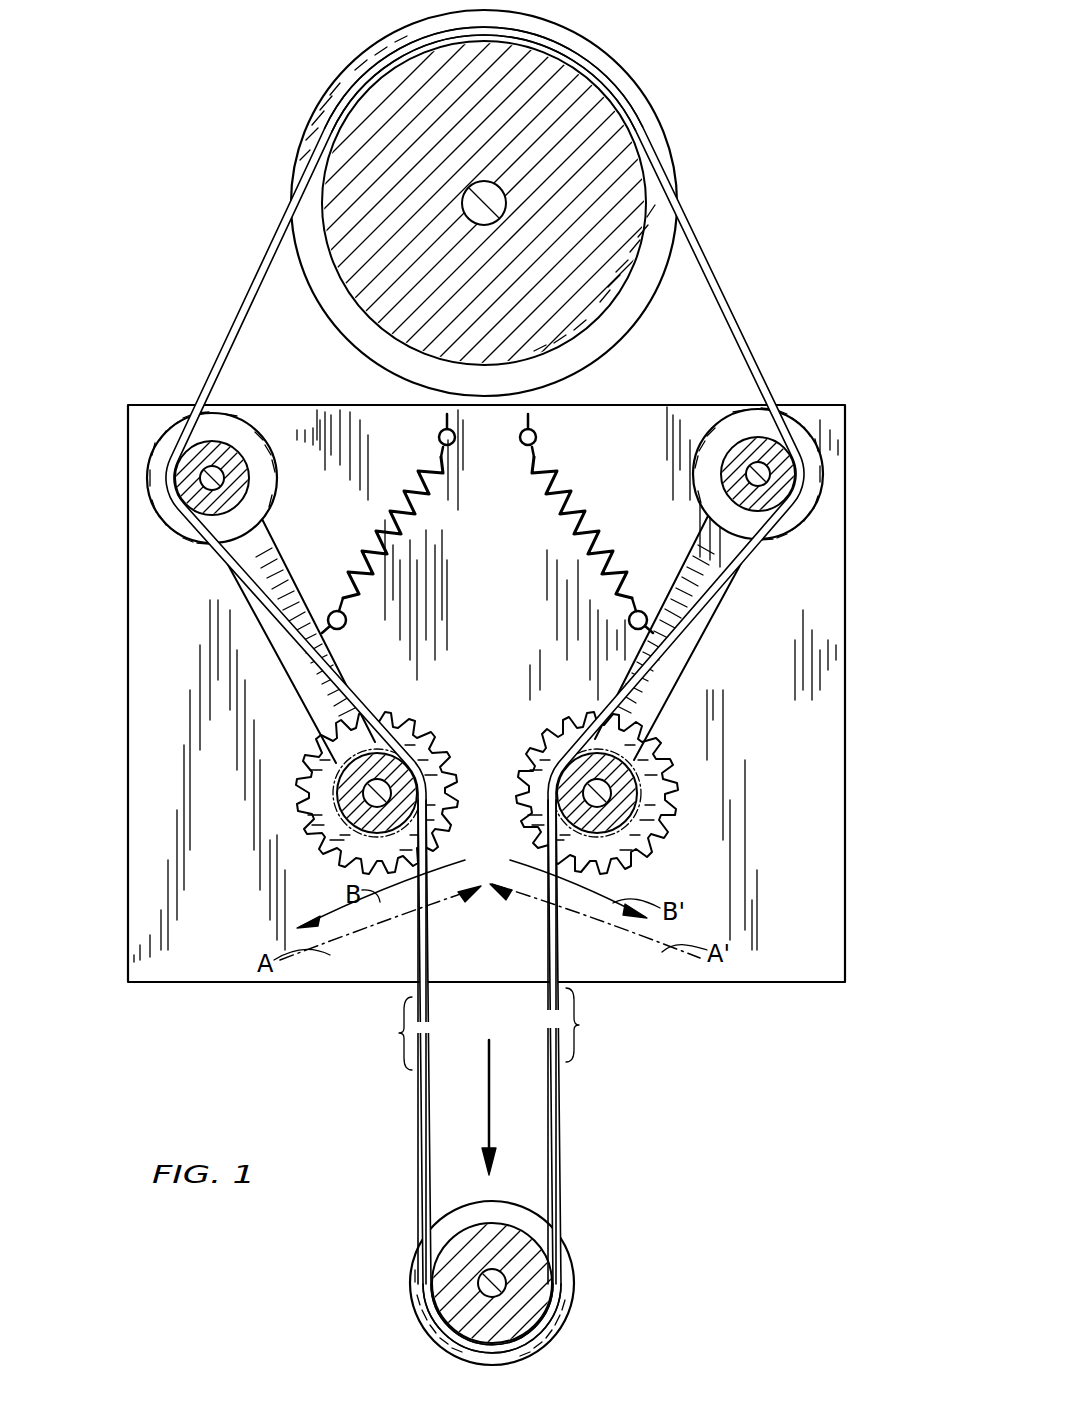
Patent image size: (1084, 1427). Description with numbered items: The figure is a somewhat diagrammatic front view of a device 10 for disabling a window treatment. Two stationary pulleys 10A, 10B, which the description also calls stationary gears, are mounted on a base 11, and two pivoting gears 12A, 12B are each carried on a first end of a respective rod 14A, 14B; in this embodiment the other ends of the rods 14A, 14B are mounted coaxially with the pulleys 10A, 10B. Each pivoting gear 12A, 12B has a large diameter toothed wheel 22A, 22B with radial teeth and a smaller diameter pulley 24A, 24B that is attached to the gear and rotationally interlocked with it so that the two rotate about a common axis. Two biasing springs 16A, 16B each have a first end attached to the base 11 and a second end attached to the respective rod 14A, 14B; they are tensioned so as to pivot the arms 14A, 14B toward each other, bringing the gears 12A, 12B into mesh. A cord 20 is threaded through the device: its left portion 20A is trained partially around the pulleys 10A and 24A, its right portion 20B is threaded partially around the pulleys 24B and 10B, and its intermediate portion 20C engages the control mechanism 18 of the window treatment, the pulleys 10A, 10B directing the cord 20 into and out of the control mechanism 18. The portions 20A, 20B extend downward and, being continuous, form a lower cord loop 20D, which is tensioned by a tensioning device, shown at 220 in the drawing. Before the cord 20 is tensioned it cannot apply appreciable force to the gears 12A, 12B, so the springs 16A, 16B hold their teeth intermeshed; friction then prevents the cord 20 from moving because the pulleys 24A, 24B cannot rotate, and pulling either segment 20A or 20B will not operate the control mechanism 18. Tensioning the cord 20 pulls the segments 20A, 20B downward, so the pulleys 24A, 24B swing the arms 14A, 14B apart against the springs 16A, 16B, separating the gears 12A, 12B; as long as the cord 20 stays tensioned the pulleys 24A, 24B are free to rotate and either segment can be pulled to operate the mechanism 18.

The device for disabling a window treatment 10 is at (108, 636).
The base 11 is at (128, 940).
The control mechanism 18 is at (588, 78).
The cord 20 is at (228, 330).
The left portion of cord 20A is at (418, 1100).
The right portion of cord 20B is at (558, 1150).
The intermediate portion of cord 20C is at (638, 126).
The lower cord loop 20D is at (556, 1275).
The lower pulley 220 is at (513, 1327).
The stationary pulley 10A is at (257, 513).
The stationary pulley 10B is at (780, 540).
The pivoting gear 12A is at (323, 743).
The pivoting gear 12B is at (650, 740).
The rod 14A is at (262, 628).
The rod 14B is at (630, 667).
The biasing spring 16A is at (405, 515).
The biasing spring 16B is at (580, 537).
The large diameter toothed wheel 22A is at (305, 831).
The large diameter toothed wheel 22B is at (643, 822).
The smaller diameter pulley 24A is at (330, 800).
The smaller diameter pulley 24B is at (618, 823).